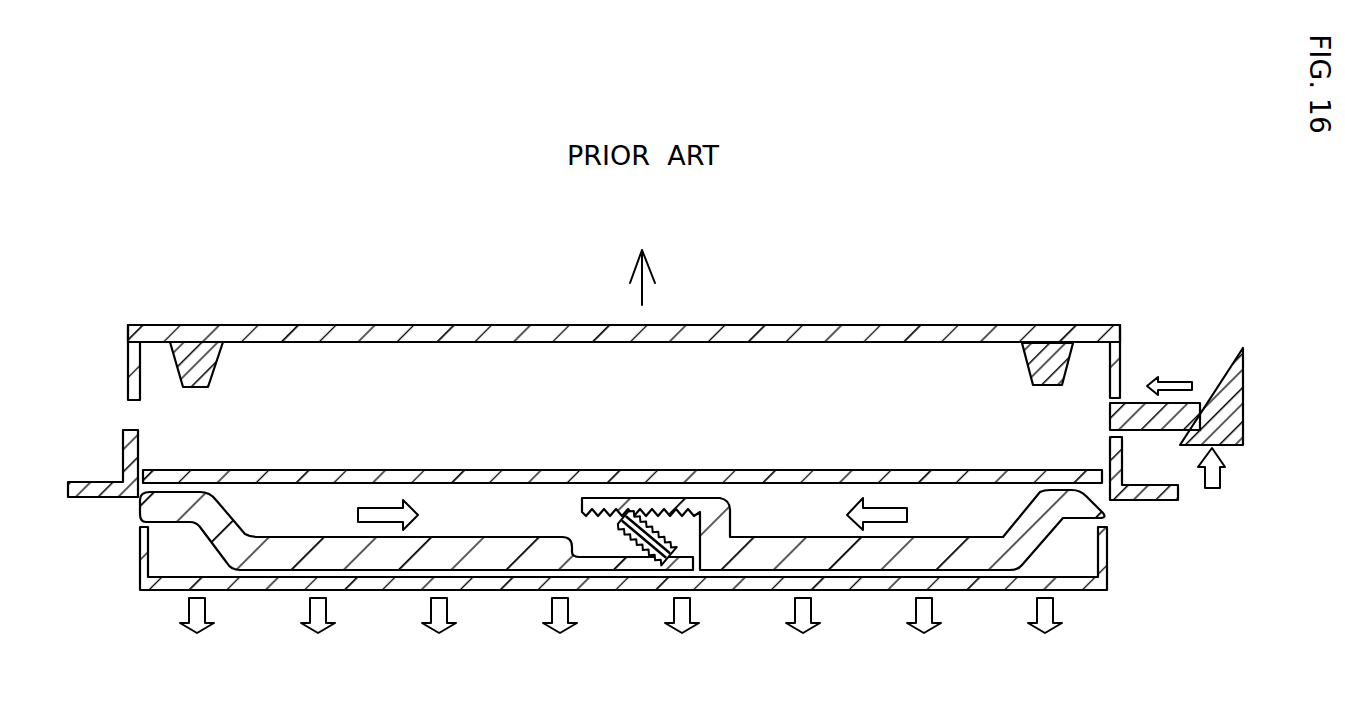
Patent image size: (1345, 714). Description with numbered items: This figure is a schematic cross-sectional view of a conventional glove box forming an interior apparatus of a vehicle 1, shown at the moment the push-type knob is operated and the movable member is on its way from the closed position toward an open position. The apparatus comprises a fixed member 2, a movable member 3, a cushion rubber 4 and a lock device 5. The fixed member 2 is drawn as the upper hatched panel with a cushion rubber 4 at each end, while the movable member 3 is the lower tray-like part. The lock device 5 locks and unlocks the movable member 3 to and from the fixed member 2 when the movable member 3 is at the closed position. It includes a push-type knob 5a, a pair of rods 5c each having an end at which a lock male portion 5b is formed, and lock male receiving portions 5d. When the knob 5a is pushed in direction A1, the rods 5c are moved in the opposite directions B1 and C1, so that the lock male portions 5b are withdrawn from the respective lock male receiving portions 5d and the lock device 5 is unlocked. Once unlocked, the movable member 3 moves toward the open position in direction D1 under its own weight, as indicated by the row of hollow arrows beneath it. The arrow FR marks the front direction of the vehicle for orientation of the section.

The interior apparatus of a vehicle 1 is at (624, 371).
The fixed member 2 is at (534, 329).
The movable member 3 is at (1075, 586).
The cushion rubber 4 is at (213, 355).
The lock device 5 is at (670, 499).
The push-type knob 5a is at (1230, 403).
The lock male portion 5b is at (150, 512).
The rod 5c is at (623, 570).
The lock male receiving portion 5d is at (130, 428).
The front direction FR is at (643, 264).
The direction A1 is at (1210, 484).
The direction B1 is at (885, 506).
The direction C1 is at (366, 505).
The direction D1 is at (690, 615).